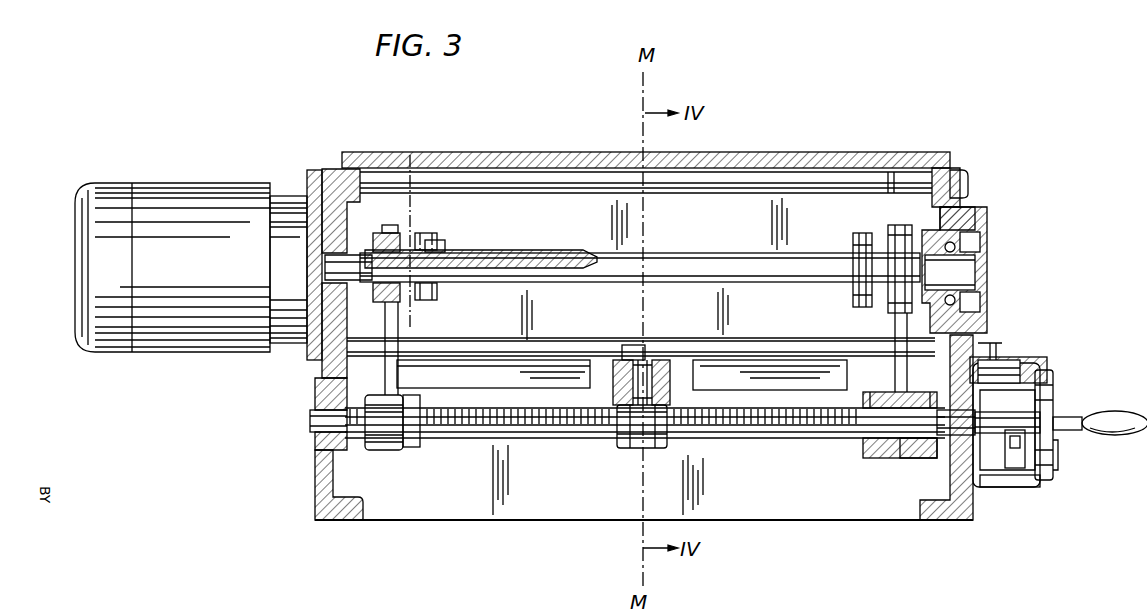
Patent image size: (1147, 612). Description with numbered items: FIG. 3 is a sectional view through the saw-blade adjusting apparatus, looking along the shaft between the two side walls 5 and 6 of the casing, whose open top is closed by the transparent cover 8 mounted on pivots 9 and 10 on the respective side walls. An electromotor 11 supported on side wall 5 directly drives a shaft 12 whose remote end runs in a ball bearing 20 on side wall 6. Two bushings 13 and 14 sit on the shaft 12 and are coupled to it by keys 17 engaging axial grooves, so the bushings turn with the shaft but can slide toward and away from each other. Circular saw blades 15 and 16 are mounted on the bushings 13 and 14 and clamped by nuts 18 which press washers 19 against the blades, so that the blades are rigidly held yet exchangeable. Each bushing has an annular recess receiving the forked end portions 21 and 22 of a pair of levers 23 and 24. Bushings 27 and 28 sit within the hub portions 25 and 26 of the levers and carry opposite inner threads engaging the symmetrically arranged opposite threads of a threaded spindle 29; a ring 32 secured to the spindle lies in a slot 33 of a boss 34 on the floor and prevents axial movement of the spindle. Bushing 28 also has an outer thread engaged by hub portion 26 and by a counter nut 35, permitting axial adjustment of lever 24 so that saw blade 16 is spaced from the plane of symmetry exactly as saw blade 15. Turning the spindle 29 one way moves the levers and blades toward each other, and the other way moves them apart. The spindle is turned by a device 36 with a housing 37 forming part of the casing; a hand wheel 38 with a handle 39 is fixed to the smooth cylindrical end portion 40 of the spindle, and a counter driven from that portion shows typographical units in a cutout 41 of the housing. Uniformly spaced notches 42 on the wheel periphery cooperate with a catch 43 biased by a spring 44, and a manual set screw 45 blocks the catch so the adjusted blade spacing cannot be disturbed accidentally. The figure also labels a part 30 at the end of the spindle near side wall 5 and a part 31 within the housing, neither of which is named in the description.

The side wall 5 is at (318, 468).
The side wall 6 is at (960, 215).
The cover 8 is at (748, 153).
The pivot 9 is at (312, 168).
The pivot 10 is at (962, 178).
The electromotor 11 is at (178, 192).
The shaft 12 is at (660, 255).
The bushing 13 is at (412, 233).
The bushing 14 is at (872, 238).
The circular saw blade 15 is at (412, 185).
The circular saw blade 16 is at (882, 192).
The key 17 is at (527, 252).
The nut 18 is at (440, 238).
The washer 19 is at (440, 300).
The ball bearing 20 is at (1007, 257).
The forked end portion 21 is at (388, 232).
The forked end portion 22 is at (892, 240).
The lever 23 is at (400, 325).
The lever 24 is at (894, 320).
The hub portion 25 is at (380, 448).
The hub portion 26 is at (900, 460).
The bushing 27 is at (420, 442).
The bushing 28 is at (858, 452).
The threaded spindle 29 is at (720, 436).
The screw end 30 is at (315, 410).
The shaft 31 is at (972, 400).
The ring 32 is at (628, 447).
The slot 33 is at (617, 400).
The boss 34 is at (625, 348).
The counter nut 35 is at (920, 462).
The spindle rotating device 36 is at (1067, 483).
The housing 37 is at (1010, 488).
The hand wheel 38 is at (1055, 463).
The handle 39 is at (1108, 412).
The cylindrical end portion 40 is at (955, 450).
The cutout 41 is at (1020, 470).
The notch 42 is at (1048, 395).
The catch 43 is at (1035, 368).
The spring 44 is at (1003, 363).
The set screw 45 is at (995, 343).